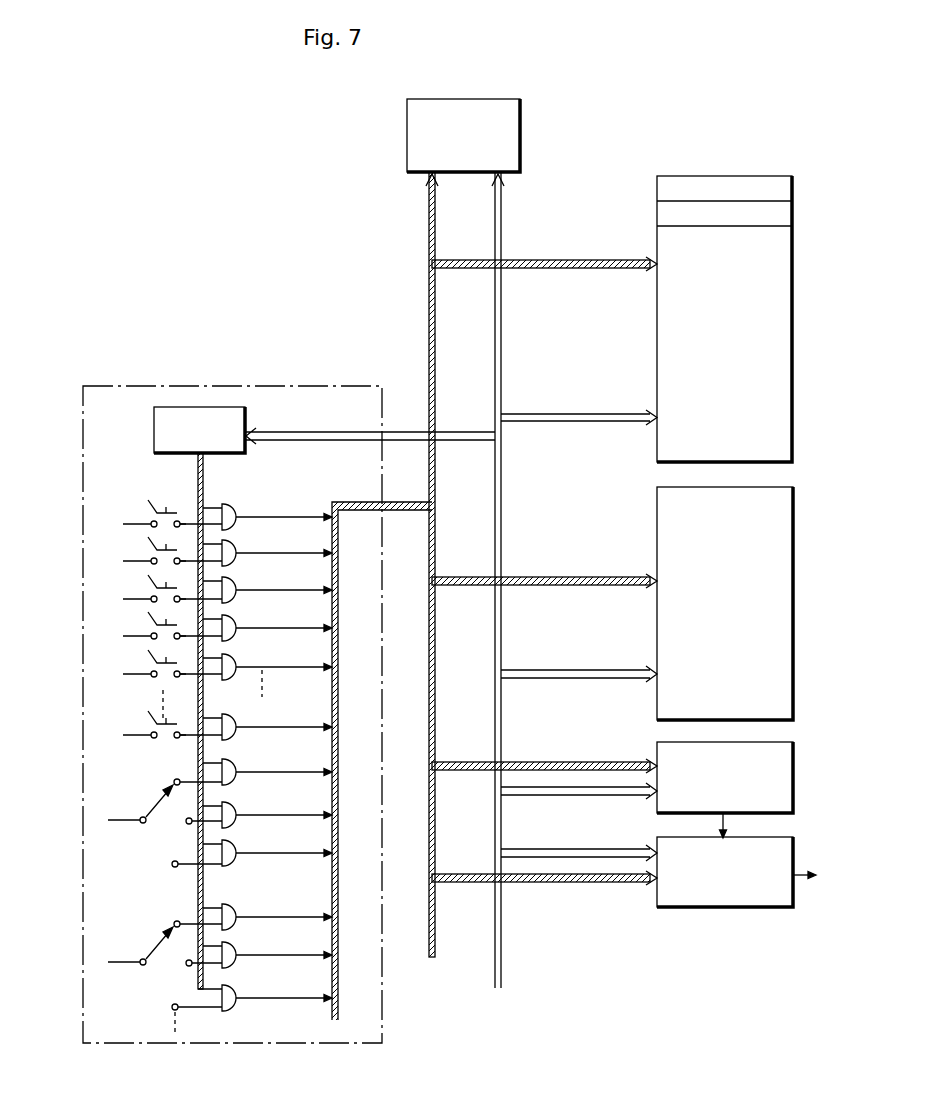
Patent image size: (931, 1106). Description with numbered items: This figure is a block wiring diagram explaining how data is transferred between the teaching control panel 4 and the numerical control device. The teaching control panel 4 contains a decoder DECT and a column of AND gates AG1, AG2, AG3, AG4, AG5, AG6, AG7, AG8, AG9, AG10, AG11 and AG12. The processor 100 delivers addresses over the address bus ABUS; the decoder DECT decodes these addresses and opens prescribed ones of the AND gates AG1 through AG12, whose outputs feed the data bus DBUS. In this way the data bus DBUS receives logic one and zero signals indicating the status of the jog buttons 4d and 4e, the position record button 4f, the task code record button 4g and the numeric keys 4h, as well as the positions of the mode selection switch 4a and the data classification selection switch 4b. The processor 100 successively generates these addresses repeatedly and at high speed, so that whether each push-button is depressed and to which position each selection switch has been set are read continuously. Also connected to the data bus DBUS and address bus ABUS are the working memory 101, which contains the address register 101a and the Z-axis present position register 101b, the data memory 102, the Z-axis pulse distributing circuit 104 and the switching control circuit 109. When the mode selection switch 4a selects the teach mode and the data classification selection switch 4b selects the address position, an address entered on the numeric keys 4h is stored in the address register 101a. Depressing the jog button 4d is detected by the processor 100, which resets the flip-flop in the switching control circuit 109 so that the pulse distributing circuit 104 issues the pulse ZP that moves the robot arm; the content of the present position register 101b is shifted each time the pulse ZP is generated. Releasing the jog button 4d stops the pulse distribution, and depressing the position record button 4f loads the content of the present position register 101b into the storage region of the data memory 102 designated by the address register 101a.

The teaching control panel 4 is at (350, 386).
The mode selection switch 4a is at (130, 832).
The data classification selection switch 4b is at (140, 972).
The jog button 4d is at (150, 502).
The jog button 4e is at (150, 539).
The position record button 4f is at (150, 577).
The task code record button 4g is at (150, 614).
The numeric keys 4h is at (150, 683).
The processor 100 is at (492, 103).
The working memory 101 is at (713, 182).
The address register 101a is at (785, 190).
The Z-axis present position register 101b is at (785, 217).
The data memory 102 is at (780, 487).
The Z-axis pulse distributing circuit 104 is at (787, 772).
The switching control circuit 109 is at (751, 860).
The decoder DECT is at (242, 407).
The AND gate AG1 is at (234, 506).
The AND gate AG2 is at (234, 549).
The AND gate AG3 is at (234, 587).
The AND gate AG4 is at (234, 624).
The AND gate AG5 is at (234, 662).
The AND gate AG6 is at (234, 726).
The AND gate AG7 is at (234, 767).
The AND gate AG8 is at (234, 807).
The AND gate AG9 is at (234, 849).
The AND gate AG10 is at (234, 911).
The AND gate AG11 is at (234, 951).
The AND gate AG12 is at (234, 993).
The data bus DBUS is at (427, 957).
The address bus ABUS is at (493, 988).
The pulse ZP is at (803, 830).